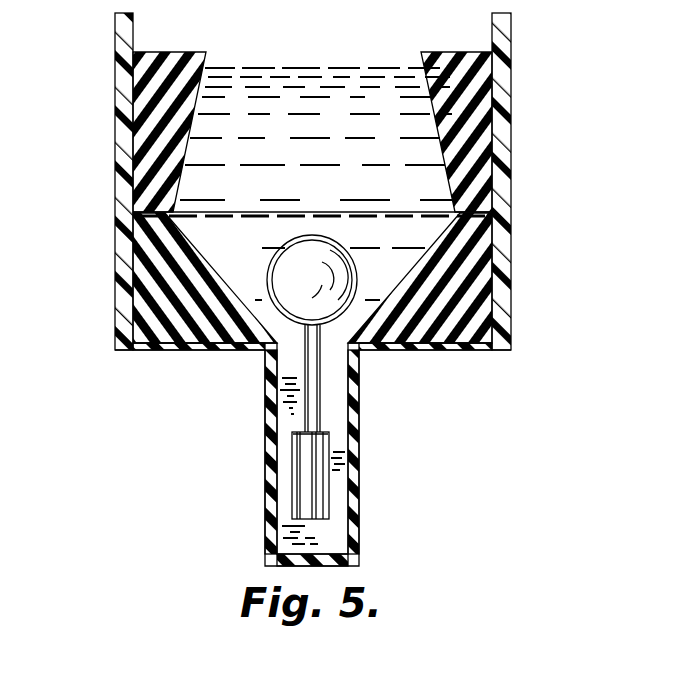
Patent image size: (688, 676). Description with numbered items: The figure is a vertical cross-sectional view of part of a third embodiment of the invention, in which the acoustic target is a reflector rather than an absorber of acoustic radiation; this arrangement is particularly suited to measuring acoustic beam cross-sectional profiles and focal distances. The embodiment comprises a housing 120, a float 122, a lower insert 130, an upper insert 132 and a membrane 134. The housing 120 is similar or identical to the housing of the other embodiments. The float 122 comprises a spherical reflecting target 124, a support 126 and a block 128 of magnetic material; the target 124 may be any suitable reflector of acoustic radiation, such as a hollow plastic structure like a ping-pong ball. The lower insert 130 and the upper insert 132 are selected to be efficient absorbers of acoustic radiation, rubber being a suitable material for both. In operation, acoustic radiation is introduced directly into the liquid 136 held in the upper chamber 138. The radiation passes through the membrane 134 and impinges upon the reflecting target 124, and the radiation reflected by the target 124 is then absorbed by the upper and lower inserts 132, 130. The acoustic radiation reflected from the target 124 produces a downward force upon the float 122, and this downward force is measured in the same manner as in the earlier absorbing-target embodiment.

The housing 120 is at (130, 112).
The float 122 is at (290, 343).
The spherical reflecting target 124 is at (272, 262).
The support 126 is at (310, 401).
The block of magnetic material 128 is at (312, 488).
The lower insert 130 is at (143, 290).
The upper insert 132 is at (143, 160).
The membrane 134 is at (433, 210).
The liquid 136 is at (311, 96).
The upper chamber 138 is at (340, 192).